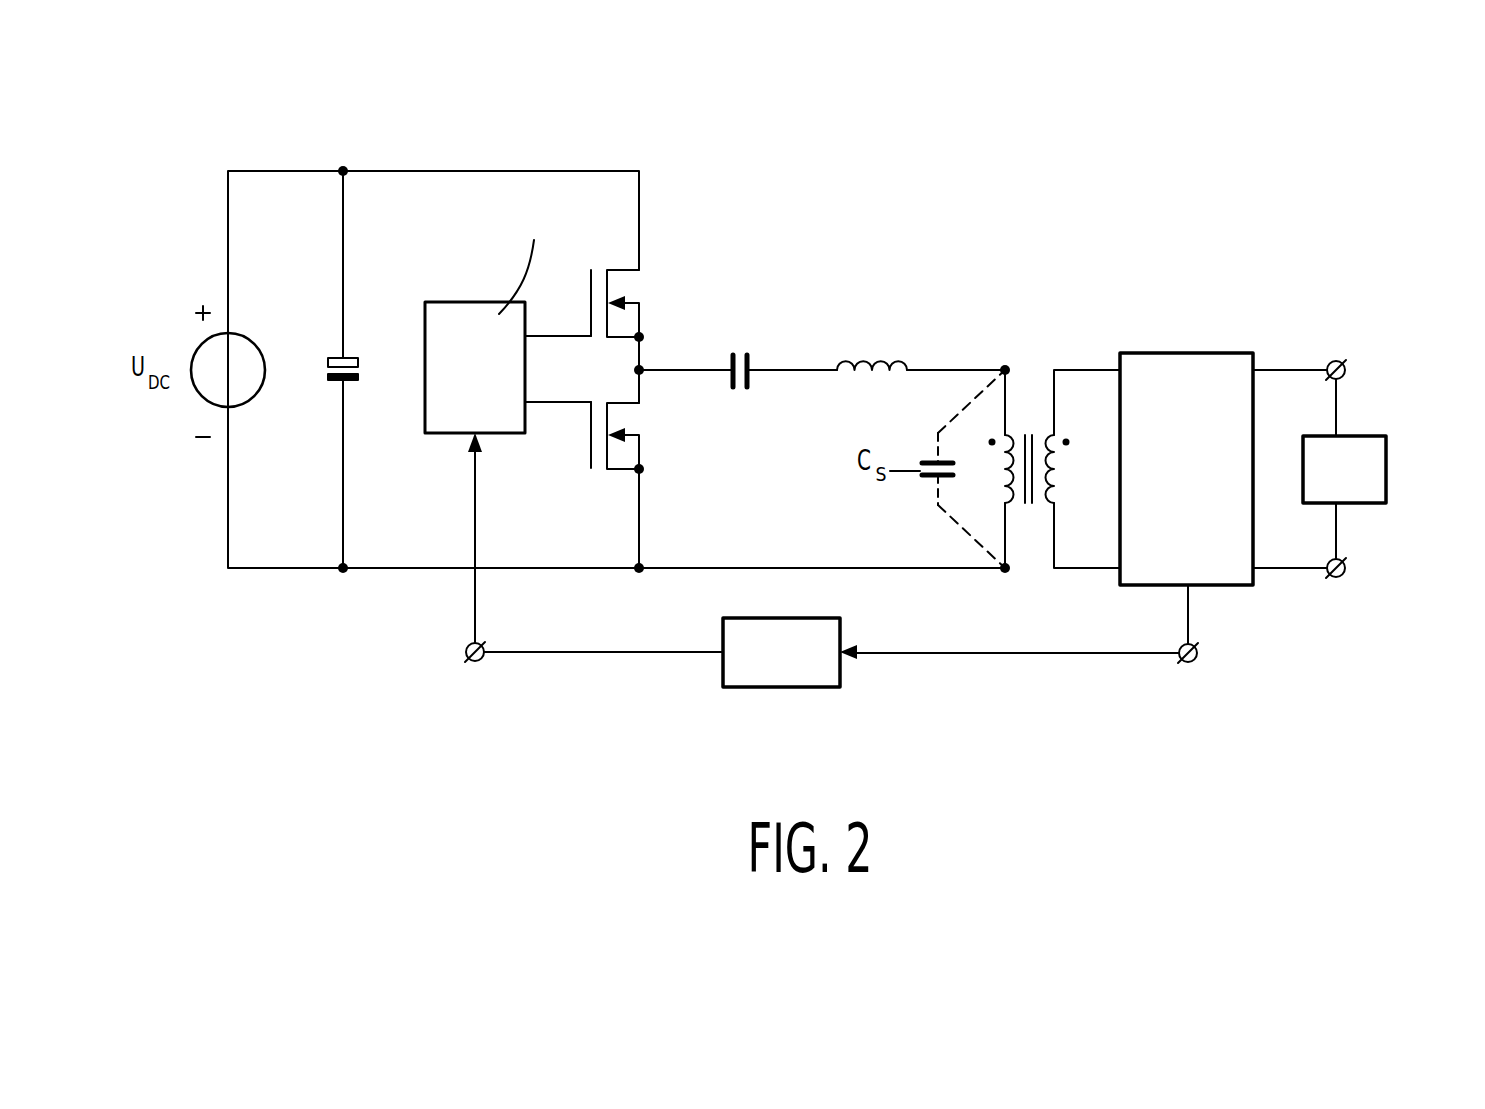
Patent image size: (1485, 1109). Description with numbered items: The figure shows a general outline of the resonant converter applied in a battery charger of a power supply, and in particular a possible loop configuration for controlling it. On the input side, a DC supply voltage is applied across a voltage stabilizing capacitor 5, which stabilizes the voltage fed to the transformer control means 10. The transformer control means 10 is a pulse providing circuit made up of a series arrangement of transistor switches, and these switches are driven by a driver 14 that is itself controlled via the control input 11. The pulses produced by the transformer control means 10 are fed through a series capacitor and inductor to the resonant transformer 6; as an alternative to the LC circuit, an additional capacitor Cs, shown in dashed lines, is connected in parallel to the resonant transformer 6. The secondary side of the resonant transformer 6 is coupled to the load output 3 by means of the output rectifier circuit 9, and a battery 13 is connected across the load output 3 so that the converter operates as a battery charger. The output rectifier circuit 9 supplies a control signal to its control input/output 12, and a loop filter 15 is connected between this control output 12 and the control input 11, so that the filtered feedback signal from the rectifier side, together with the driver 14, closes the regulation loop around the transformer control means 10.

The load output 3 is at (1336, 360).
The voltage stabilizing capacitor 5 is at (327, 370).
The resonant transformer 6 is at (1030, 360).
The output rectifier circuit 9 is at (1182, 353).
The transformer control means 10 is at (702, 256).
The control input 11 is at (475, 662).
The control input/output 12 is at (1186, 663).
The battery 13 is at (1386, 463).
The driver 14 is at (461, 302).
The loop filter 15 is at (790, 687).